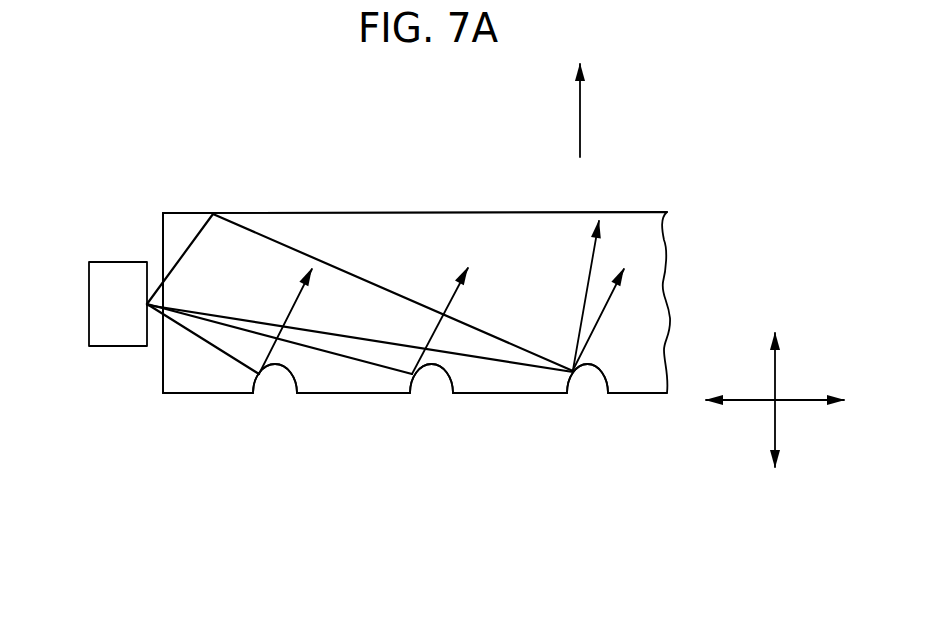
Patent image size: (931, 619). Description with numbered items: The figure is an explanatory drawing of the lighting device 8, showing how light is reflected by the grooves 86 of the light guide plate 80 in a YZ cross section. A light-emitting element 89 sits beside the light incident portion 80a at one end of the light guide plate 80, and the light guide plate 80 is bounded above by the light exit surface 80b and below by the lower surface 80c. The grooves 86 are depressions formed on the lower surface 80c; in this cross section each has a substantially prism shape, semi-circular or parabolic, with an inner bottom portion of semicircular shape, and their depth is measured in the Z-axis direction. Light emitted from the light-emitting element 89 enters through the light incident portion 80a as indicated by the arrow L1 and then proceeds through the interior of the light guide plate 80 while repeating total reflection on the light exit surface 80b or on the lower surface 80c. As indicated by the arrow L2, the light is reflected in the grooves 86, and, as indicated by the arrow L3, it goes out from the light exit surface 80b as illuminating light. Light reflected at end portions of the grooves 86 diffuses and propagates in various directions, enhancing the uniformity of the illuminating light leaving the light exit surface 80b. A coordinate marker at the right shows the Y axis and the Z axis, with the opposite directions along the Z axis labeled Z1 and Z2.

The lighting device 8 is at (331, 80).
The light guide plate 80 is at (473, 206).
The light incident portion 80a is at (163, 367).
The light exit surface 80b is at (626, 212).
The lower surface 80c is at (540, 393).
The grooves 86 is at (417, 373).
The light-emitting element 89 is at (100, 330).
The arrow L1 is at (174, 337).
The arrow L2 is at (434, 331).
The arrow L3 is at (583, 107).
The Z-axis Z is at (776, 370).
The Y-axis Y is at (800, 400).
The Z1 direction Z1 is at (773, 487).
The Z2 direction Z2 is at (773, 315).